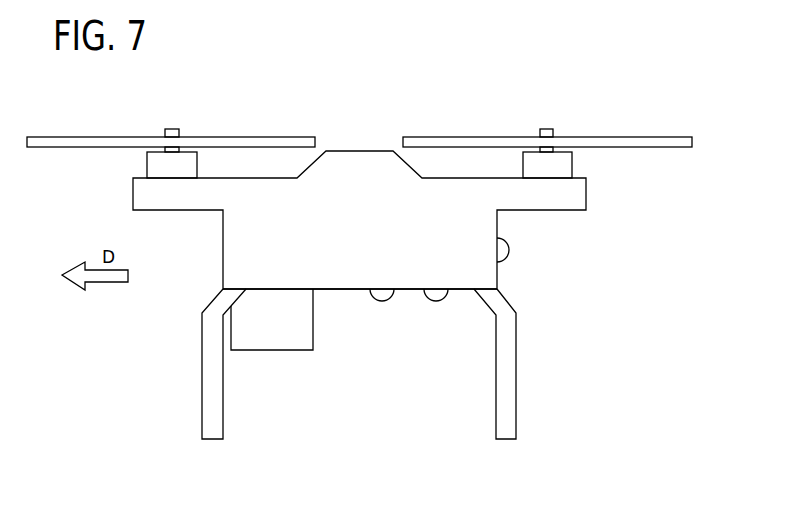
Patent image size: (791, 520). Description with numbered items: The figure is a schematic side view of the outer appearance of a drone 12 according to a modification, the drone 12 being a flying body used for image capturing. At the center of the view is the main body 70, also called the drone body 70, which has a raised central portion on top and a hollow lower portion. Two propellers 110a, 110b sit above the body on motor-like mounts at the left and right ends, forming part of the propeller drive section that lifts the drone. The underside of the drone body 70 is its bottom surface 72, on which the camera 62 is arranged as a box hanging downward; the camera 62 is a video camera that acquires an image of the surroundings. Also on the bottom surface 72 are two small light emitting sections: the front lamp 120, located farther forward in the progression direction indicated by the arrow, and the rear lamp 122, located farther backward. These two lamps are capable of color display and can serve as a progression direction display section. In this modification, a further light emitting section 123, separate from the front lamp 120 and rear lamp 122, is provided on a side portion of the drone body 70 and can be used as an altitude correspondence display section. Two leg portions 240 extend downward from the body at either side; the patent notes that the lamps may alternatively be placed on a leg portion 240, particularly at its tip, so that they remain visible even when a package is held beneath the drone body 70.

The drone 12 is at (623, 56).
The main body 70 is at (488, 274).
The bottom surface 72 is at (340, 292).
The camera 62 is at (267, 343).
The propeller 110a is at (262, 137).
The propeller 110b is at (635, 136).
The front lamp 120 is at (387, 300).
The rear lamp 122 is at (442, 300).
The light emitting section 123 is at (508, 243).
The leg portion 240 is at (207, 405).